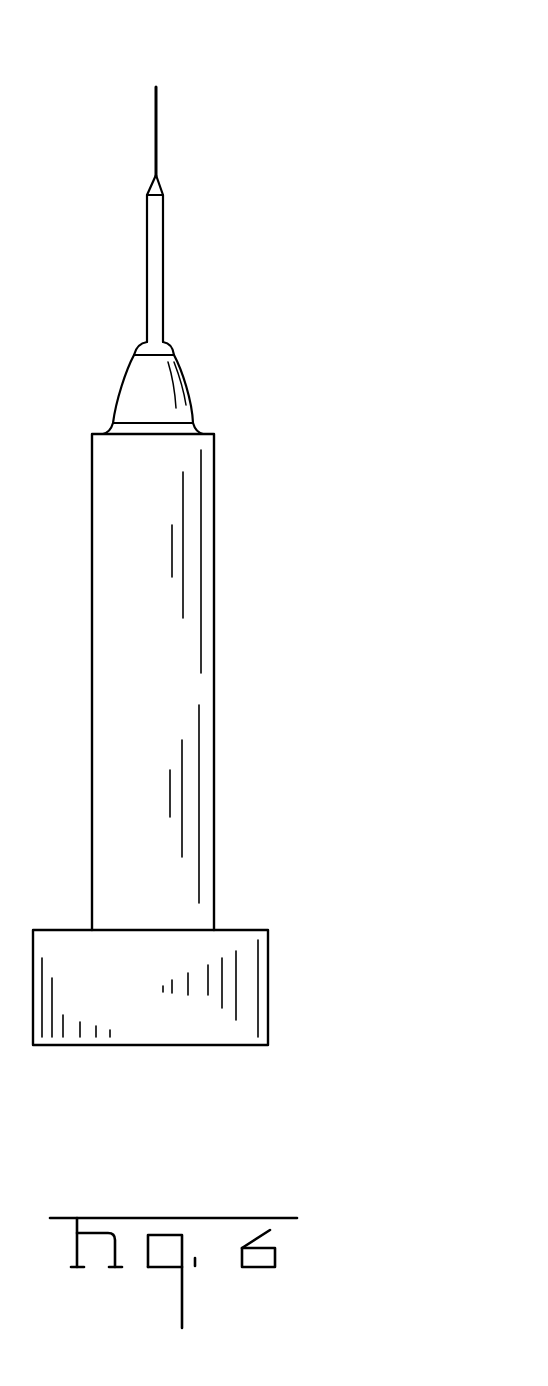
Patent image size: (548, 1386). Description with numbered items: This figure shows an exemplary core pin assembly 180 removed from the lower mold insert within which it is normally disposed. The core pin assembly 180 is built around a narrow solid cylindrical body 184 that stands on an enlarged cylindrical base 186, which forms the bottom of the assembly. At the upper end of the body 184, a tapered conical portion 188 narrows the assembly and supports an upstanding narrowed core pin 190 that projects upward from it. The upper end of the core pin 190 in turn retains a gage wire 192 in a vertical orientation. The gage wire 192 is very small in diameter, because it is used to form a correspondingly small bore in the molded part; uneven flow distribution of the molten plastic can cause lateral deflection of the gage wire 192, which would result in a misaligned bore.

The core pin assembly 180 is at (274, 540).
The body 184 is at (144, 869).
The base 186 is at (193, 1020).
The tapered conical portion 188 is at (158, 392).
The core pin 190 is at (158, 252).
The gage wire 192 is at (156, 127).